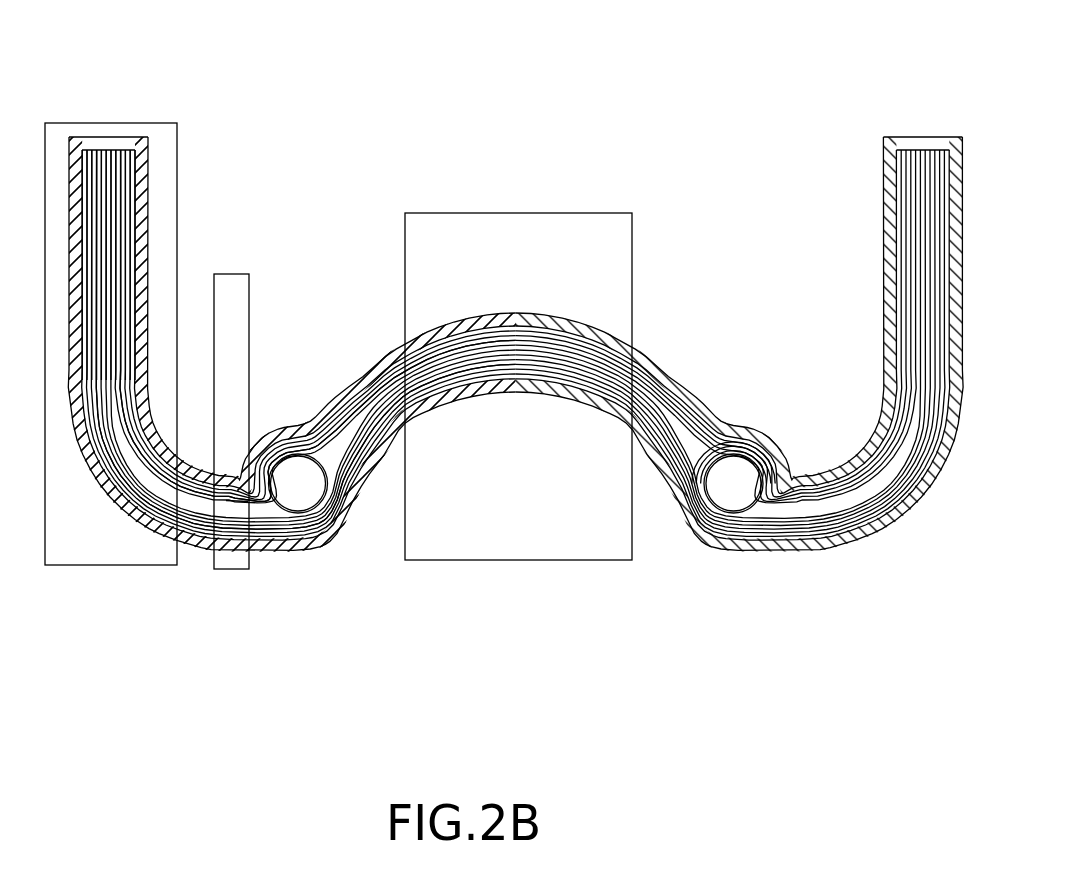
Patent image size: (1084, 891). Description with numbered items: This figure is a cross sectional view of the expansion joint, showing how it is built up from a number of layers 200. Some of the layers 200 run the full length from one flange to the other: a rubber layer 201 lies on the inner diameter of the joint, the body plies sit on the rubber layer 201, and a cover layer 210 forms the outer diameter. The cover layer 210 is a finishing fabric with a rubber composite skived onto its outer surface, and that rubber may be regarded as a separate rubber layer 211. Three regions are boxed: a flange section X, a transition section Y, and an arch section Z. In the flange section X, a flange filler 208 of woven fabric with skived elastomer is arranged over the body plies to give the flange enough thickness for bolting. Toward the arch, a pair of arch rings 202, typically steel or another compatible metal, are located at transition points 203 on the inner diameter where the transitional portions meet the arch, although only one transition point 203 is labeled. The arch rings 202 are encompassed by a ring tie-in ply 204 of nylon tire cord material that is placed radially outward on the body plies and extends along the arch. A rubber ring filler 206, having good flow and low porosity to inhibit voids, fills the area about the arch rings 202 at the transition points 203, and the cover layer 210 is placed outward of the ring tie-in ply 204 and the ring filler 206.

The layers 200 is at (361, 198).
The rubber layer 201 is at (149, 532).
The arch rings 202 is at (312, 485).
The transition points 203 is at (708, 524).
The ring tie-in ply 204 is at (592, 368).
The ring filler 206 is at (237, 508).
The flange filler 208 is at (118, 162).
The cover layer 210 is at (497, 342).
The rubber layer 211 is at (473, 325).
The flange section X is at (72, 568).
The transition section Y is at (251, 287).
The arch section Z is at (601, 212).